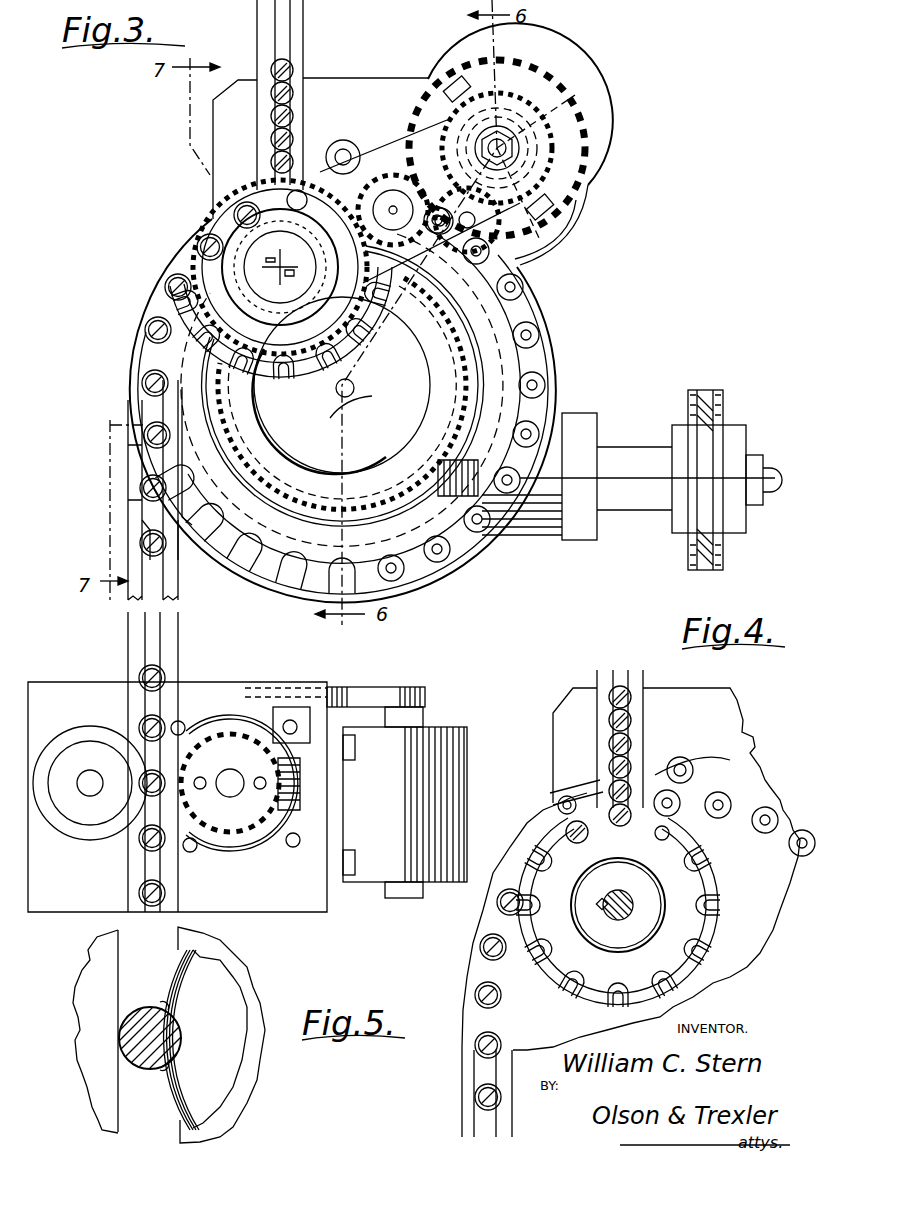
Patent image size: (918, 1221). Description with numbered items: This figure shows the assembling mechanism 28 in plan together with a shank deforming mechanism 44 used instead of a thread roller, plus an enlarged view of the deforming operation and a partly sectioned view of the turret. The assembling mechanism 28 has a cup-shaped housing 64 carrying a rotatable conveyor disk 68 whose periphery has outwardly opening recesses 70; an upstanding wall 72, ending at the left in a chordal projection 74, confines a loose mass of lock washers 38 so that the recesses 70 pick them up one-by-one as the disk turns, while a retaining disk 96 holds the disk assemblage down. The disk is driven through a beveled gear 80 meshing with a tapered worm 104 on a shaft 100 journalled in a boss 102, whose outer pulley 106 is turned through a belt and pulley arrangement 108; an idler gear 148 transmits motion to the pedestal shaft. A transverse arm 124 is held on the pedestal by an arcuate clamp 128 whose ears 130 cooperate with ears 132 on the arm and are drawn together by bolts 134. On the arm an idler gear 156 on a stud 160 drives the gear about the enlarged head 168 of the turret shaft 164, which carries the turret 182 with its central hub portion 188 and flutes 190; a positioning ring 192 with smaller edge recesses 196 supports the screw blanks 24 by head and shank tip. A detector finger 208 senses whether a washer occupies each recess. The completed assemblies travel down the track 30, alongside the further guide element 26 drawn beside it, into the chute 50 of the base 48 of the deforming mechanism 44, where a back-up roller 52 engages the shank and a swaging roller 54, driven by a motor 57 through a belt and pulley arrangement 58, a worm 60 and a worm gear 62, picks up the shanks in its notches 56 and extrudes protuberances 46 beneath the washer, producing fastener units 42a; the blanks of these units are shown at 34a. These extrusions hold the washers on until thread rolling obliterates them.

In FIG. 3, the screw blanks 24 is at (283, 90).
In FIG. 4, the screw blanks 24 is at (605, 715).
In FIG. 3, the ball bearings 26 is at (294, 14).
In FIG. 4, the ball bearings 26 is at (637, 727).
In FIG. 3, the assembling mechanism 28 is at (578, 300).
In FIG. 3, the track 30 is at (126, 540).
In FIG. 4, the track 30 is at (464, 1106).
In FIG. 5, the pin 34a is at (130, 1040).
In FIG. 3, the lock washers 38 is at (446, 560).
In FIG. 4, the lock washers 38 is at (708, 788).
In FIG. 3, the fastener units 42a is at (136, 893).
In FIG. 3, the shank deforming mechanism 44 is at (218, 680).
In FIG. 5, the protuberances 46 is at (163, 1002).
In FIG. 3, the base 48 is at (286, 905).
In FIG. 3, the chute 50 is at (128, 868).
In FIG. 5, the chute 50 is at (127, 1092).
In FIG. 3, the back-up roller 52 is at (90, 728).
In FIG. 5, the back-up roller 52 is at (92, 992).
In FIG. 3, the swaging roller 54 is at (277, 840).
In FIG. 5, the swaging roller 54 is at (222, 1008).
In FIG. 3, the notches 56 is at (176, 720).
In FIG. 5, the notches 56 is at (182, 998).
In FIG. 3, the motor 57 is at (465, 732).
In FIG. 3, the belt and pulley arrangement 58 is at (368, 692).
In FIG. 3, the worm 60 is at (322, 815).
In FIG. 3, the worm gear 62 is at (230, 825).
In FIG. 3, the cup-shaped housing 64 is at (533, 263).
In FIG. 3, the conveyor disk 68 is at (532, 303).
In FIG. 4, the conveyor disk 68 is at (732, 832).
In FIG. 3, the peripheral recesses 70 is at (338, 574).
In FIG. 4, the peripheral recesses 70 is at (730, 787).
In FIG. 3, the upstanding wall 72 is at (554, 389).
In FIG. 3, the chordal projection 74 is at (190, 440).
In FIG. 3, the beveled gear 80 is at (505, 371).
In FIG. 3, the retaining disk 96 is at (424, 394).
In FIG. 3, the shaft 100 is at (607, 473).
In FIG. 3, the boss 102 is at (553, 525).
In FIG. 3, the tapered worm 104 is at (347, 456).
In FIG. 3, the pulley 106 is at (713, 418).
In FIG. 3, the belt and pulley arrangement 108 is at (708, 392).
In FIG. 3, the transverse arm 124 is at (447, 108).
In FIG. 3, the arcuate clamp 128 is at (582, 85).
In FIG. 3, the ears 130 is at (478, 98).
In FIG. 3, the ears 132 is at (460, 102).
In FIG. 3, the bolts 134 is at (505, 78).
In FIG. 3, the idler gear 148 is at (452, 412).
In FIG. 3, the idler gear 156 is at (388, 150).
In FIG. 3, the stud 160 is at (333, 143).
In FIG. 4, the turret shaft 164 is at (627, 893).
In FIG. 4, the enlarged head 168 is at (618, 910).
In FIG. 3, the turret 182 is at (338, 418).
In FIG. 4, the turret 182 is at (677, 890).
In FIG. 4, the central hub portion 188 is at (548, 872).
In FIG. 4, the flutes 190 is at (703, 907).
In FIG. 3, the positioning ring 192 is at (263, 428).
In FIG. 4, the positioning ring 192 is at (707, 940).
In FIG. 3, the edge recesses 196 is at (349, 386).
In FIG. 3, the detector finger 208 is at (318, 147).
In FIG. 4, the detector finger 208 is at (590, 790).